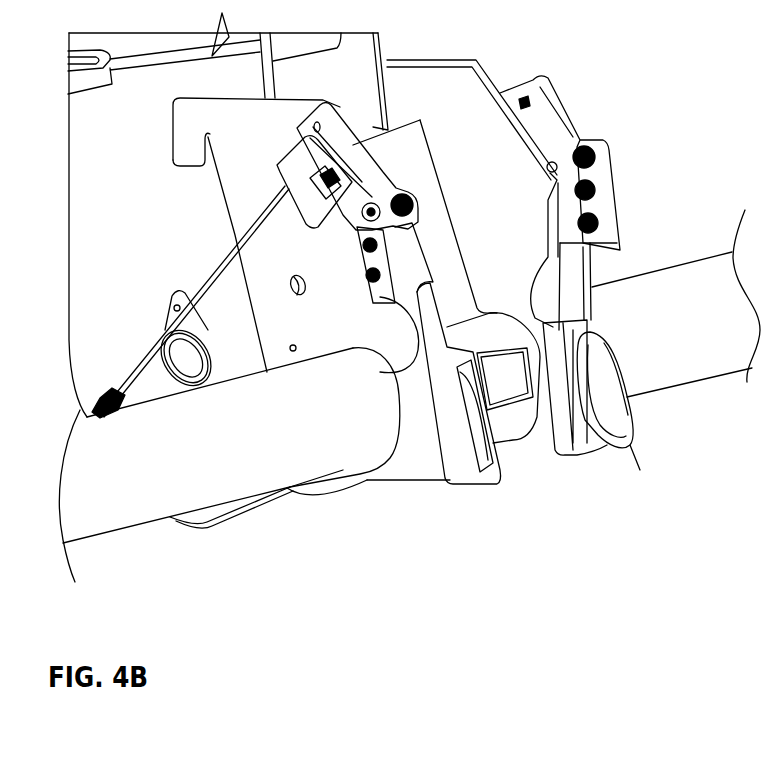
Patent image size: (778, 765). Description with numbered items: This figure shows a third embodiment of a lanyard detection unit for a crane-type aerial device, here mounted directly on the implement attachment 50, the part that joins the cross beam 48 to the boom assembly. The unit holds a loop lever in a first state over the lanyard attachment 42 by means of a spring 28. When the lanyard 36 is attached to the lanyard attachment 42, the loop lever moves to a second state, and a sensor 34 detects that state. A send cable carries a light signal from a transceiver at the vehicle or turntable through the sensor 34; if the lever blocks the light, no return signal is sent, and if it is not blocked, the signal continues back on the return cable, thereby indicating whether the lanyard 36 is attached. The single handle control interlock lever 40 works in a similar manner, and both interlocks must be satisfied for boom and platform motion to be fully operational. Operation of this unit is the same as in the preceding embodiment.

The implement attachment 50 is at (80, 117).
The sensor 34 is at (274, 160).
The spring 28 is at (577, 140).
The single handle control interlock lever 40 is at (593, 273).
The lanyard 36 is at (585, 484).
The lanyard attachment 42 is at (607, 372).
The cross beam 48 is at (118, 512).